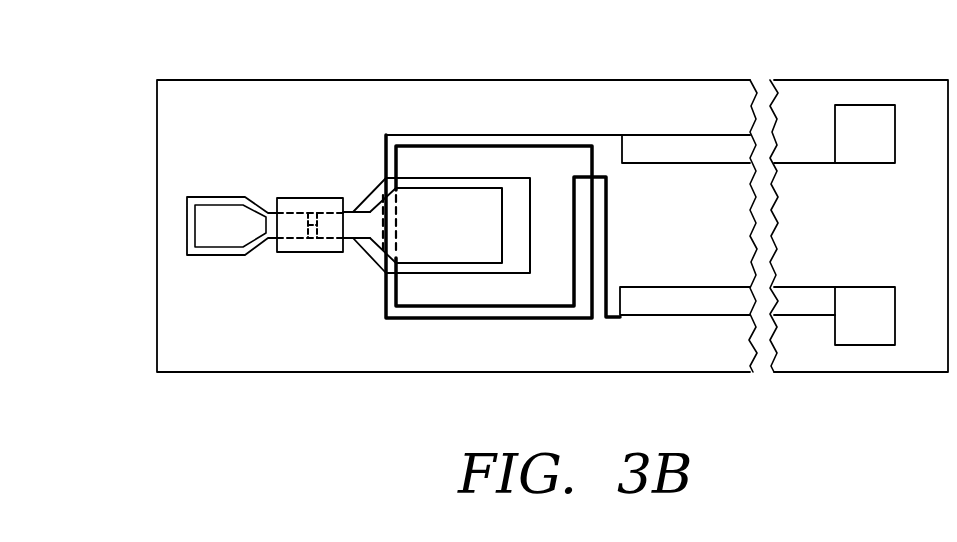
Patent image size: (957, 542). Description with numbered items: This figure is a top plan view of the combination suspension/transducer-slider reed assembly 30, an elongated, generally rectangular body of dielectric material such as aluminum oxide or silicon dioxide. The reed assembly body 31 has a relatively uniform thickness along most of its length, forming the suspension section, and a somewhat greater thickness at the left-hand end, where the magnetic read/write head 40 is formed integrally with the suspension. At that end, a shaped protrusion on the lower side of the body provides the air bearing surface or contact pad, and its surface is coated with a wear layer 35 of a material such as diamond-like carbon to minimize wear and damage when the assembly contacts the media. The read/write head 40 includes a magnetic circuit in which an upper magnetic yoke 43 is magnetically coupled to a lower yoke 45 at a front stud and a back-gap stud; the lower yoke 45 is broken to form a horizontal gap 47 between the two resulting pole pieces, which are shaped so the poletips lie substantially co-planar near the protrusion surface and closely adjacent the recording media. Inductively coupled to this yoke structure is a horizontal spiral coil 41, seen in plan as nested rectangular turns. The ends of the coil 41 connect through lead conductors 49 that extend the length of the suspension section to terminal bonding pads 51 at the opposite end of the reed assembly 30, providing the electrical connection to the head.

The combination suspension/transducer-slider structure 30 is at (204, 395).
The reed assembly body 31 is at (237, 66).
The wear layer 35 is at (307, 259).
The magnetic read/write transducer or head 40 is at (222, 230).
The horizontal spiral coil 41 is at (554, 130).
The upper magnetic yoke 43 is at (357, 236).
The lower yoke 45 is at (216, 186).
The horizontal gap 47 is at (288, 253).
The lead conductors 49 is at (798, 133).
The terminal bonding pads 51 is at (862, 112).